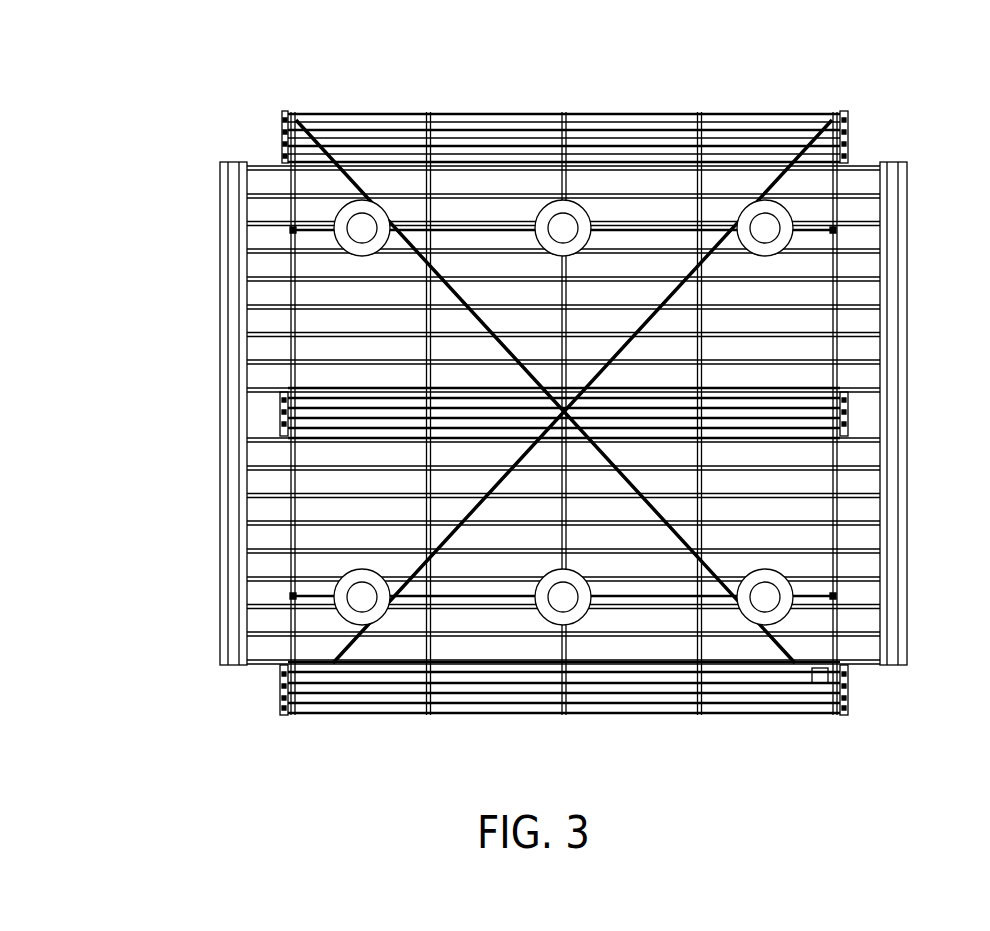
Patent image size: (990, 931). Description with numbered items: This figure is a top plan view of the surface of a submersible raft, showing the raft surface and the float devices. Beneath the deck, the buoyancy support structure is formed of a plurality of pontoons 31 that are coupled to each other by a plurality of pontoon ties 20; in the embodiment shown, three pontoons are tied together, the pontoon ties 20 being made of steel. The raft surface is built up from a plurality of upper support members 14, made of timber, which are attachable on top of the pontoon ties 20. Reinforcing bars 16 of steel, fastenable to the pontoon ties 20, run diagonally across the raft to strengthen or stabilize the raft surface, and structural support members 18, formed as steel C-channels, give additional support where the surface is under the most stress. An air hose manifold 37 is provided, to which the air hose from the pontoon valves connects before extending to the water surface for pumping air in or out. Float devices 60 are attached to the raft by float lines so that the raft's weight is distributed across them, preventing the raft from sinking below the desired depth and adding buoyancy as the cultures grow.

The upper support members 14 is at (248, 607).
The reinforcing bars 16 is at (677, 290).
The structural support members 18 is at (657, 748).
The pontoon ties 20 is at (428, 648).
The pontoons 31 is at (535, 692).
The air hose manifold 37 is at (820, 683).
The float devices 60 is at (793, 238).